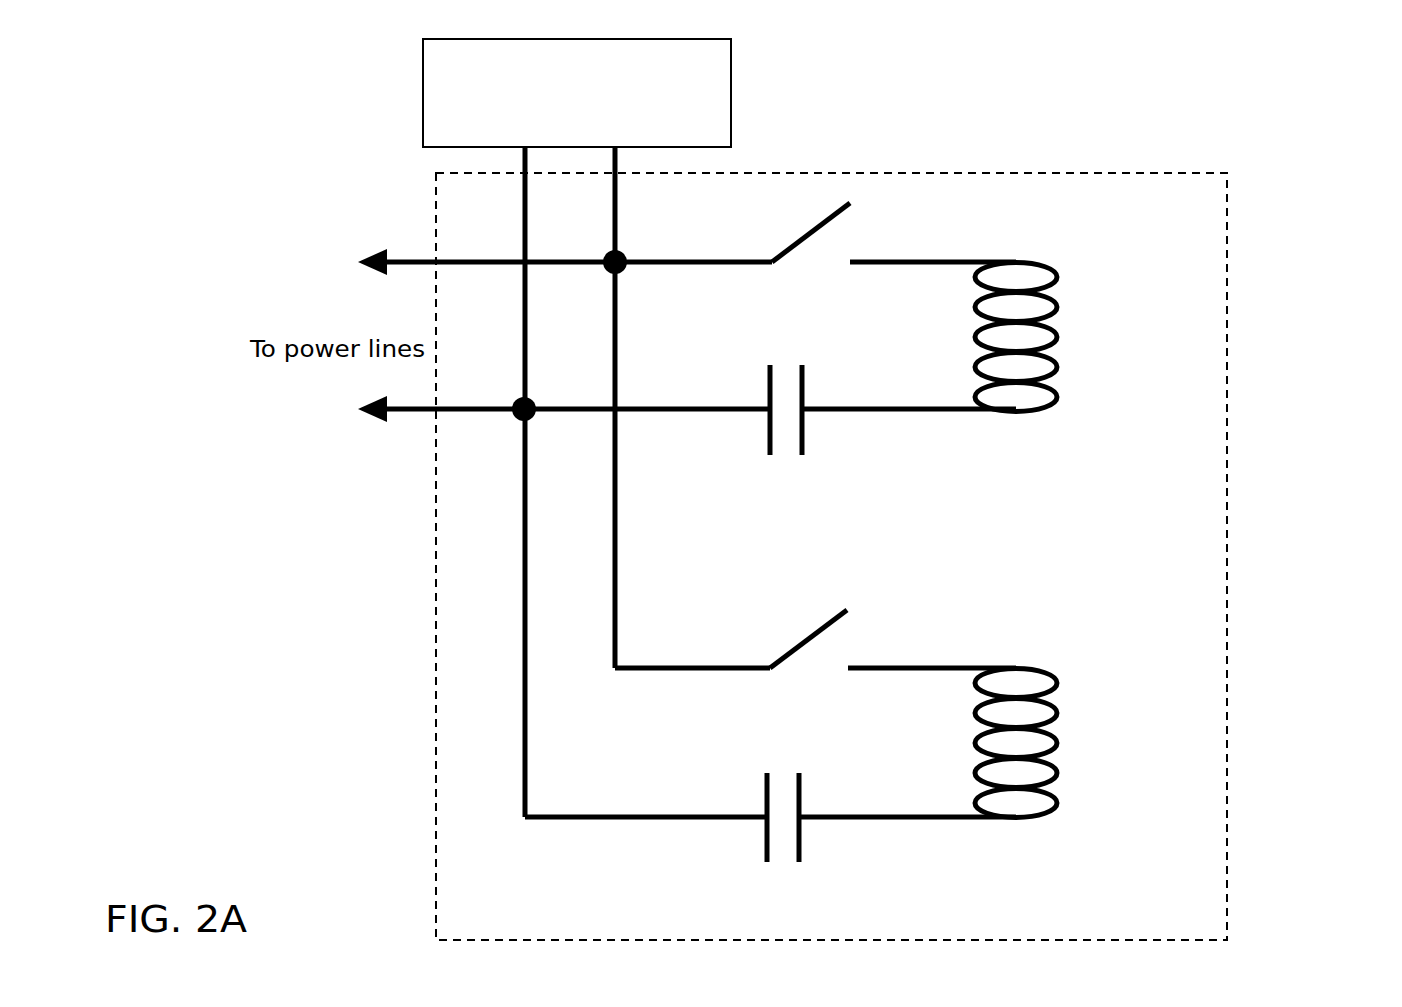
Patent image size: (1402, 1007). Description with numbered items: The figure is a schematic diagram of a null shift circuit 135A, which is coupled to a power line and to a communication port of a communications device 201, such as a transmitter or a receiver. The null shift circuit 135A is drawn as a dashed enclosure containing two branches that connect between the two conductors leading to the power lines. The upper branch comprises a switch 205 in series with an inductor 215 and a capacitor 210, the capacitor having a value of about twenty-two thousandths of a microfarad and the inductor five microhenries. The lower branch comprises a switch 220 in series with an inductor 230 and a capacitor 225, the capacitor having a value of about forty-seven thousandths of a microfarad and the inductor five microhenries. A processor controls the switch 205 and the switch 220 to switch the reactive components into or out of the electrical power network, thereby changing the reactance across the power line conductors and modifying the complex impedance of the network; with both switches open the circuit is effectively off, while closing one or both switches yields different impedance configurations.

The communications device 201 is at (715, 113).
The null shift circuit 135A is at (1197, 292).
The switch 205 is at (808, 230).
The capacitor 210 is at (787, 425).
The inductor 215 is at (1033, 277).
The switch 220 is at (808, 634).
The capacitor 225 is at (783, 832).
The inductor 230 is at (1007, 685).